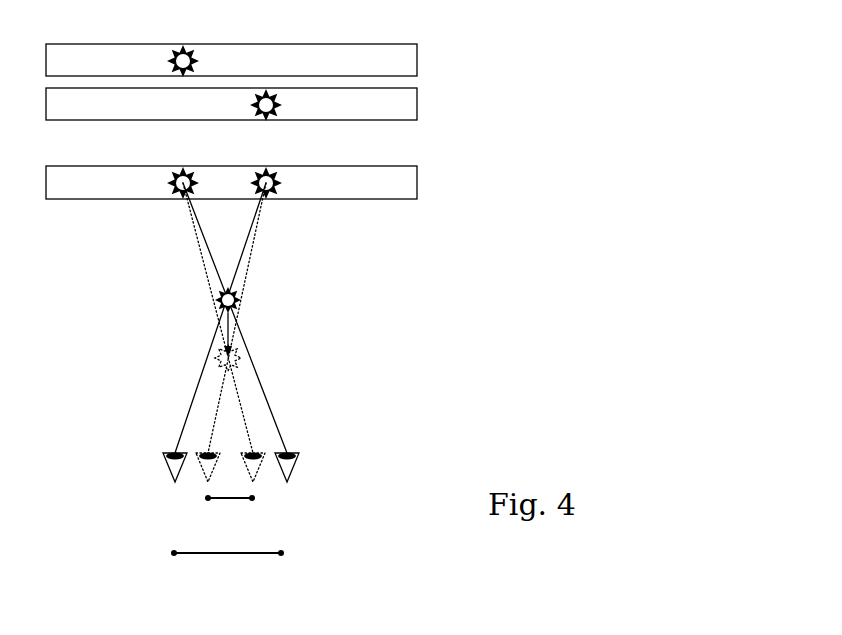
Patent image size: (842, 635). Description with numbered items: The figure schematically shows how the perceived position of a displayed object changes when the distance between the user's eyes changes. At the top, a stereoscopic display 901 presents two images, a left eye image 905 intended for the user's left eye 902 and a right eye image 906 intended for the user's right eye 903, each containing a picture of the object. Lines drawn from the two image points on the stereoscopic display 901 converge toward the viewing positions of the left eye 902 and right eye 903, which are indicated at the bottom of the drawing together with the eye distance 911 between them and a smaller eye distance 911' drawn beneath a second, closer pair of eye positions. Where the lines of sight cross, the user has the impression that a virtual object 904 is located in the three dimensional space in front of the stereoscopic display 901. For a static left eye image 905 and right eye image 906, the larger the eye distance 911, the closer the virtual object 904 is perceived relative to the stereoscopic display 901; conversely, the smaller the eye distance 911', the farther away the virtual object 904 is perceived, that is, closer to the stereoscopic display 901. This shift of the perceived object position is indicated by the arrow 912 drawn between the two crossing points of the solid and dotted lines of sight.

The right eye image 906 is at (417, 57).
The left eye image 905 is at (417, 101).
The stereoscopic display 901 is at (417, 182).
The arrow 912 is at (230, 340).
The virtual object 904 is at (218, 365).
The left eye 902 is at (164, 472).
The right eye 903 is at (298, 470).
The eye distance 911' is at (244, 521).
The eye distance 911 is at (231, 576).